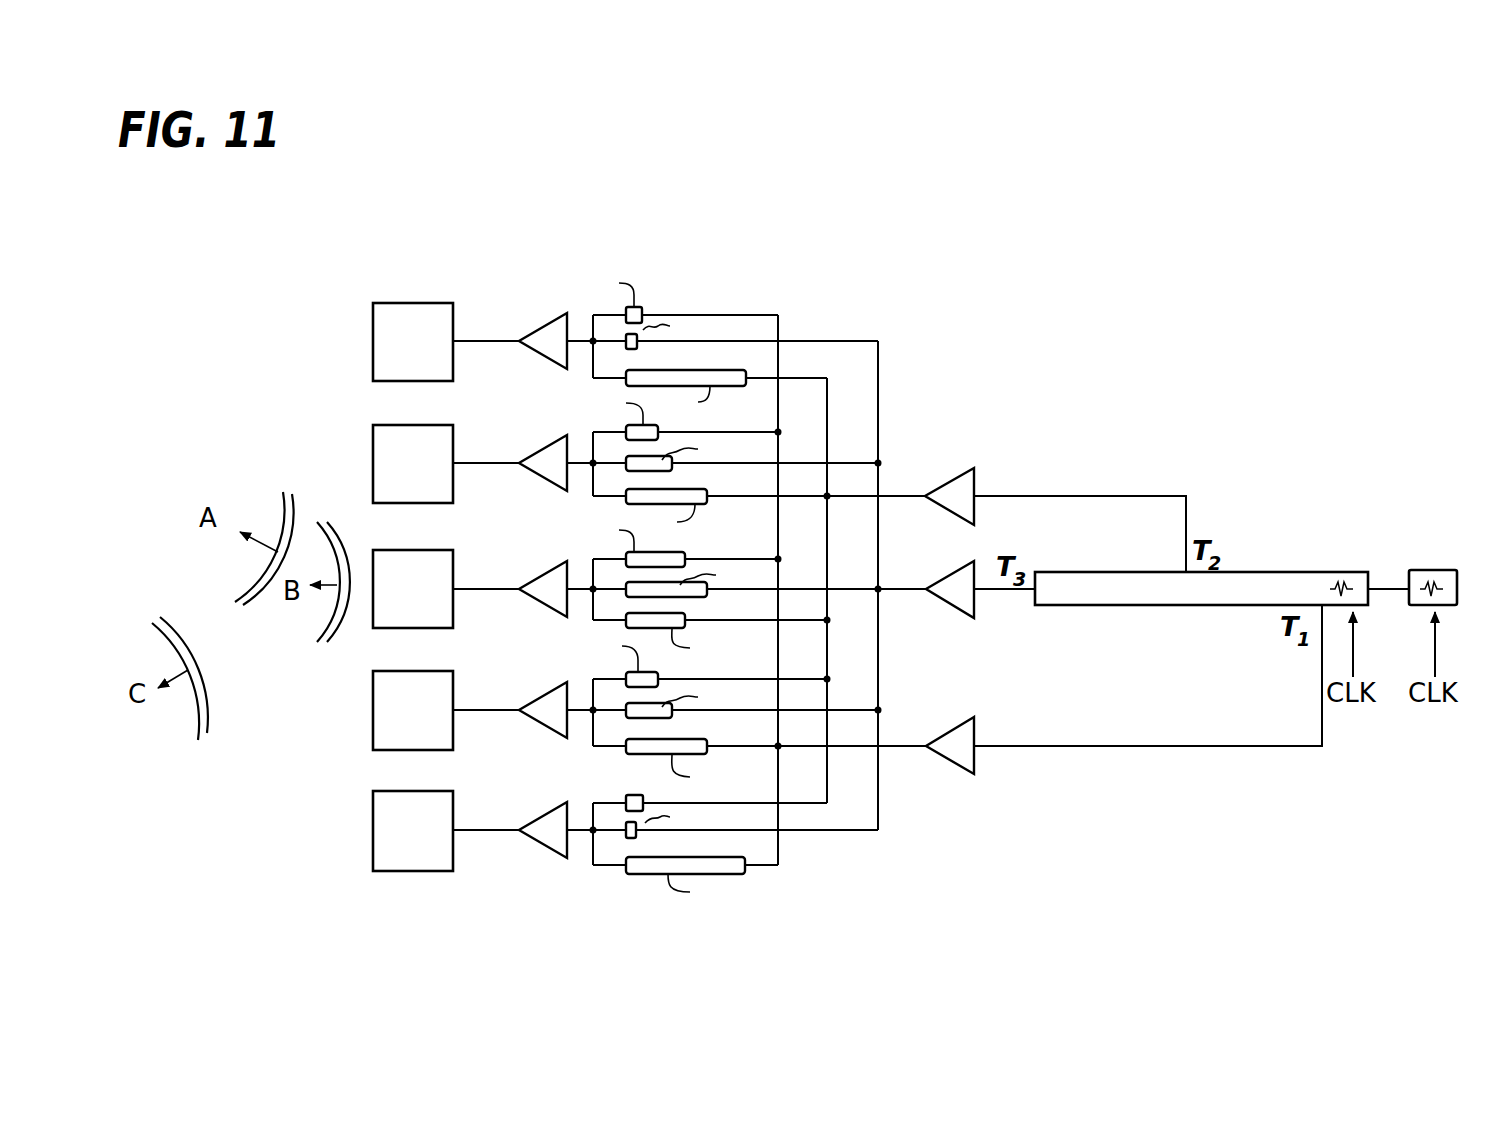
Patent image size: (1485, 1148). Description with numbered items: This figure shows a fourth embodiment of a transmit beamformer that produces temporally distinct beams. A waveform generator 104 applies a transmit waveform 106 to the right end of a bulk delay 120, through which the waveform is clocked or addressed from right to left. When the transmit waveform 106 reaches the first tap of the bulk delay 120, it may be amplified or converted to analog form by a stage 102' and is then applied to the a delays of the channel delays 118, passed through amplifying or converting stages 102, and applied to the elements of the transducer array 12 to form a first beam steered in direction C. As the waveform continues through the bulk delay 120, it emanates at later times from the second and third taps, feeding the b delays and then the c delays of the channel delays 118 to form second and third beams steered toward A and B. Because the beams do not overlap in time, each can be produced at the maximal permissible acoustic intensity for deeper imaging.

The transducer array 12 is at (410, 297).
The stages 102 is at (517, 533).
The channel delays 118 is at (721, 298).
The stage 102' is at (988, 623).
The bulk delay 120 is at (1193, 606).
The transmit waveform 106 is at (1363, 556).
The waveform generator 104 is at (1437, 569).